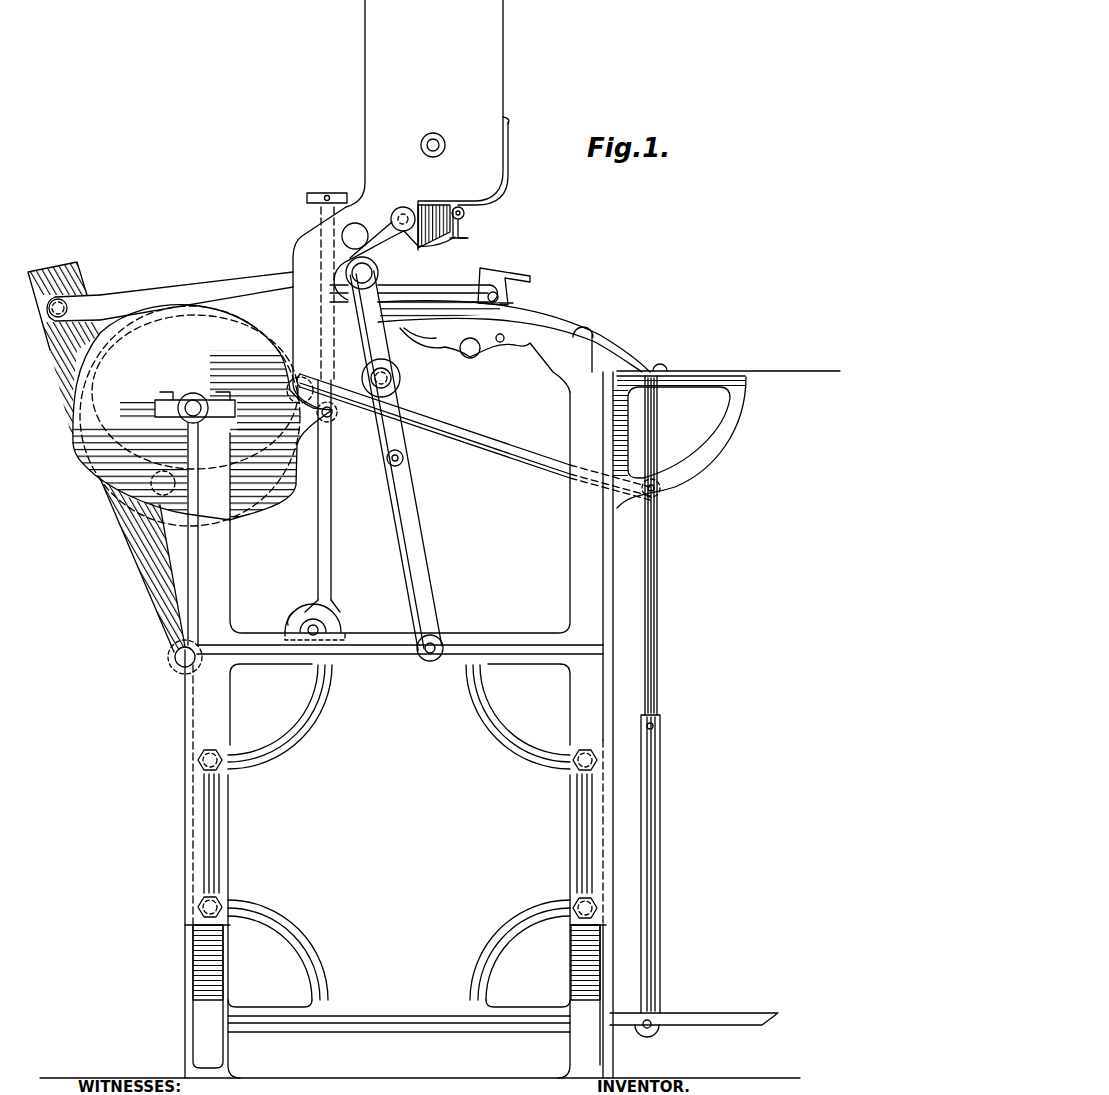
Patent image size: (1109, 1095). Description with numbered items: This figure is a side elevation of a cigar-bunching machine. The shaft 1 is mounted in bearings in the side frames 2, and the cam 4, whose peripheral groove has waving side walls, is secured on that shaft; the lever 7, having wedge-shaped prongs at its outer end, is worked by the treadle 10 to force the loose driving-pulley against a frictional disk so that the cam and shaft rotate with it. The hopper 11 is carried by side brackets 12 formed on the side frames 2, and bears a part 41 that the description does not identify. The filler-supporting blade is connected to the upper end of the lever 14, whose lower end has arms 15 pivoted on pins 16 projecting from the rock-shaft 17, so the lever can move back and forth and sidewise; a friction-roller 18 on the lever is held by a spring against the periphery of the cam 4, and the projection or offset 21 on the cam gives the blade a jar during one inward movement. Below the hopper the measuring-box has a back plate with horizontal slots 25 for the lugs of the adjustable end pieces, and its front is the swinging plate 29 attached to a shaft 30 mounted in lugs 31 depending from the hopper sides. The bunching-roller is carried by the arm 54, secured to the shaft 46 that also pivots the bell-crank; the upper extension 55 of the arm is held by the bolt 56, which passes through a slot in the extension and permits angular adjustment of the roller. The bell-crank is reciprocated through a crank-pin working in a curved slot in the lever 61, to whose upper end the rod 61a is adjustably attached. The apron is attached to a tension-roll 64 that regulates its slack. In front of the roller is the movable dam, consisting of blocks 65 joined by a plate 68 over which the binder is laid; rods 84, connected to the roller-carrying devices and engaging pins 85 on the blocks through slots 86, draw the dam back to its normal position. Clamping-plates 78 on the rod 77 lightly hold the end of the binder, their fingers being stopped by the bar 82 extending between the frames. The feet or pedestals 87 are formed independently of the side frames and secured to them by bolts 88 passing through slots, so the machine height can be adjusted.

The shaft 1 is at (193, 394).
The side frames 2 is at (440, 721).
The cam 4 is at (201, 414).
The lever 7 is at (511, 452).
The treadle 10 is at (731, 1012).
The hopper 11 is at (401, 204).
The side brackets 12 is at (394, 247).
The lever 14 is at (331, 473).
The arms 15 is at (332, 620).
The pins 16 is at (291, 620).
The rock-shaft 17 is at (340, 634).
The friction-roller 18 is at (333, 416).
The projection or offset 21 is at (105, 355).
The horizontal slots 25 is at (434, 226).
The swinging plate 29 is at (462, 238).
The shaft 30 is at (466, 212).
The lugs 31 is at (462, 216).
The stud 41 is at (446, 146).
The shaft 46 is at (431, 662).
The arm 54 is at (420, 521).
The extension 55 is at (372, 352).
The bolt 56 is at (401, 378).
The lever 61 is at (60, 420).
The rod 61a is at (236, 292).
The tension-roll 64 is at (355, 236).
The blocks 65 is at (514, 291).
The plate 68 is at (534, 275).
The rod 77 is at (478, 354).
The clamping-plates 78 is at (440, 350).
The bar 82 is at (505, 337).
The rods 84 is at (470, 285).
The pins 85 is at (489, 306).
The slots 86 is at (433, 285).
The feet or pedestals 87 is at (396, 962).
The bolts 88 is at (198, 763).